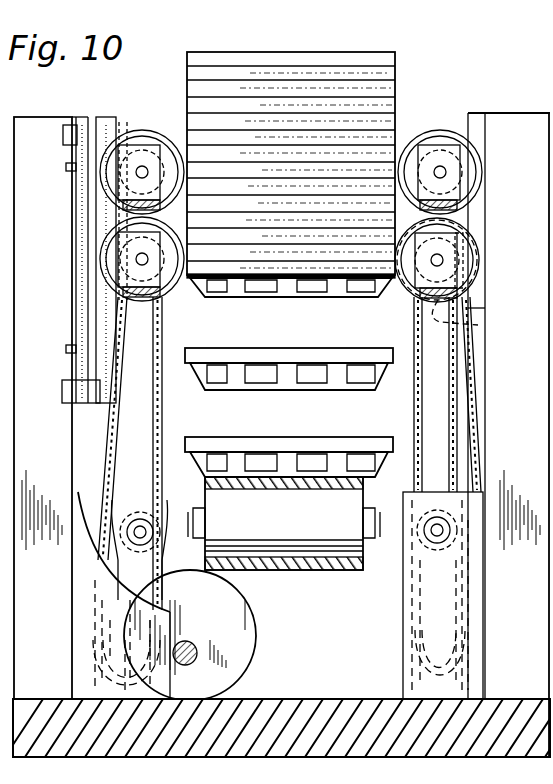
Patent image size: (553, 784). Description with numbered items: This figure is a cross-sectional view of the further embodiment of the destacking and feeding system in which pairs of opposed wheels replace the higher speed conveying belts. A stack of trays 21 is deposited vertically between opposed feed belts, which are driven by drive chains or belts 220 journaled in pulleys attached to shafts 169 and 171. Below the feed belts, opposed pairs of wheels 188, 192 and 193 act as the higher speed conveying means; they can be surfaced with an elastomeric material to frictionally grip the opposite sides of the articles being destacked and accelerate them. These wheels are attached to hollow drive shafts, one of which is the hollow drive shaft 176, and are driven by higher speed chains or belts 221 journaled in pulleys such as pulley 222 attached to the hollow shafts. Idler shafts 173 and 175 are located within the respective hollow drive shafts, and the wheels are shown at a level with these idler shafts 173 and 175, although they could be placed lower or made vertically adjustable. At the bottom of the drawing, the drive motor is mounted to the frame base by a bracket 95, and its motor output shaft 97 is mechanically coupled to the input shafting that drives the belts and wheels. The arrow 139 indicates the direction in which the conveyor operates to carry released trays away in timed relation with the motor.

The pallet 21 is at (298, 74).
The shaft 169 is at (145, 170).
The shaft 171 is at (441, 168).
The idler shaft 173 is at (140, 258).
The idler shaft 175 is at (440, 258).
The hollow drive shaft 176 is at (462, 254).
The pulley 222 is at (460, 268).
The wheel 193 is at (480, 325).
The wheel 188 is at (170, 298).
The wheel 192 is at (405, 298).
The drive chains or belts 220 is at (458, 415).
The higher speed chains or belts 221 is at (105, 455).
The arrow 139 is at (308, 533).
The motor output shaft 97 is at (198, 645).
The bracket 95 is at (226, 645).